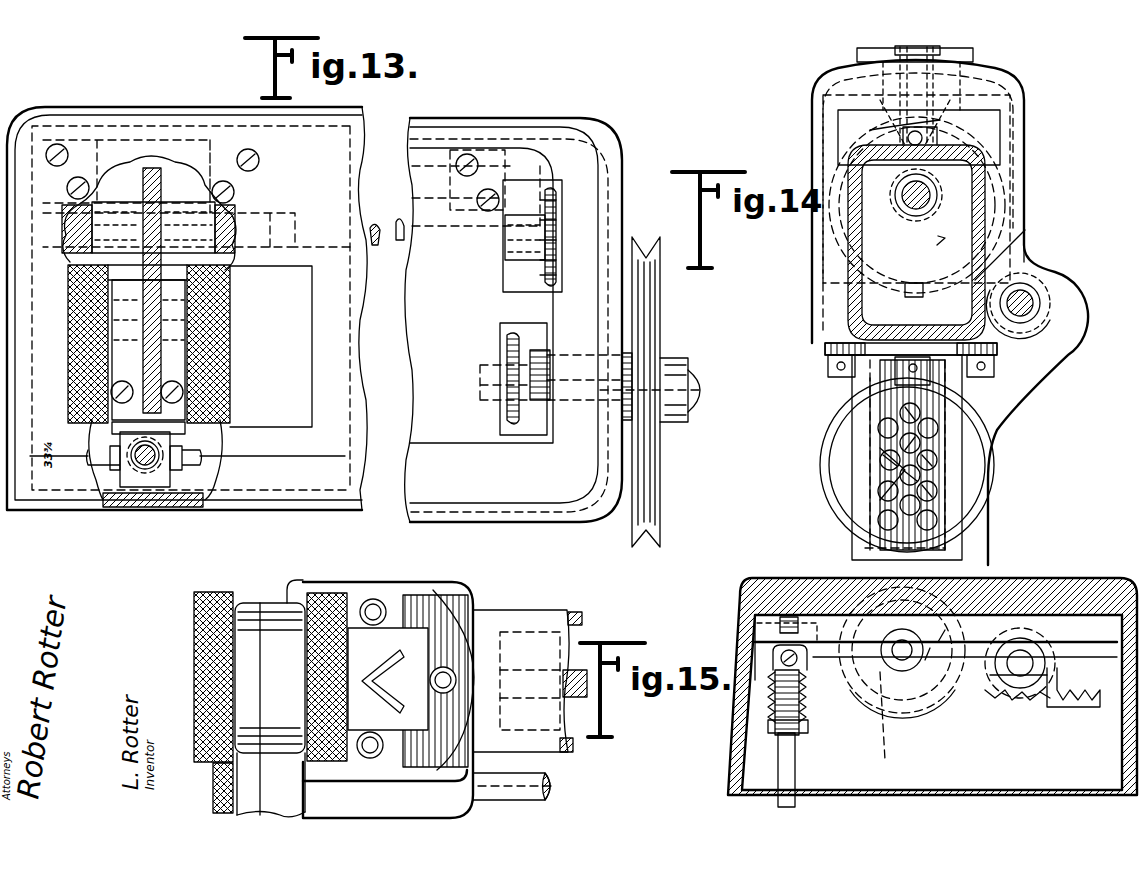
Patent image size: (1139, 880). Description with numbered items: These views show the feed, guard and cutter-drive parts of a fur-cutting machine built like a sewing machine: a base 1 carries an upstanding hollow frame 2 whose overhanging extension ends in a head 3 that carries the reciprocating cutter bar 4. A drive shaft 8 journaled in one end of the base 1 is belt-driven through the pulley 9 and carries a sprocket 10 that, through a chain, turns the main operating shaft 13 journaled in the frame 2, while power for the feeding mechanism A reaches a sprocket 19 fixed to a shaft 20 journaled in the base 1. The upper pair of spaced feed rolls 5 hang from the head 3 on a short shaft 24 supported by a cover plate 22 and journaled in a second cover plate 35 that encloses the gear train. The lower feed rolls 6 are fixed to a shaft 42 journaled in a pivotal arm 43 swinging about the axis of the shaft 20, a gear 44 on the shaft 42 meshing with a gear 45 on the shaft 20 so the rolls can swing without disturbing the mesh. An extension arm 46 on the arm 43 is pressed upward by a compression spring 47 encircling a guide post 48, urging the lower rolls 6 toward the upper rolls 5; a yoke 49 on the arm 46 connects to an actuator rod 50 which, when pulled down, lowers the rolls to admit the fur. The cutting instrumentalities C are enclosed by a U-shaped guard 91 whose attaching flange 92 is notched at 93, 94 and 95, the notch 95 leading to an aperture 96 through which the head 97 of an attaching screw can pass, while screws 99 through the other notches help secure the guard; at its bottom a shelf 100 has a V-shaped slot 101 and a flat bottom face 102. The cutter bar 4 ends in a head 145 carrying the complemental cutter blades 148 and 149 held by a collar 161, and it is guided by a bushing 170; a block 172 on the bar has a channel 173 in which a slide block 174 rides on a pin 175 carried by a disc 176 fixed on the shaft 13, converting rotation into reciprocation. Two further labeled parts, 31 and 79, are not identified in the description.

In FIG. 13, the base 1 is at (216, 85).
In FIG. 14, the frame 2 is at (1000, 245).
In FIG. 15, the frame 2 is at (560, 613).
In FIG. 13, the head 3 is at (434, 87).
In FIG. 14, the head 3 is at (1025, 150).
In FIG. 15, the head 3 is at (345, 590).
In FIG. 14, the cutter bar 4 is at (900, 234).
In FIG. 14, the upper feed rolls 5 is at (985, 515).
In FIG. 15, the upper feed rolls 5 is at (195, 650).
In FIG. 13, the lower feed rolls 6 is at (110, 382).
In FIG. 14, the lower feed rolls 6 is at (945, 575).
In FIG. 13, the drive shaft 8 is at (700, 396).
In FIG. 13, the pulley 9 is at (650, 505).
In FIG. 13, the sprocket 10 is at (510, 358).
In FIG. 14, the main operating shaft 13 is at (935, 188).
In FIG. 15, the main operating shaft 13 is at (575, 700).
In FIG. 13, the sprocket 19 is at (545, 198).
In FIG. 13, the shaft 20 is at (424, 242).
In FIG. 14, the shaft 20 is at (1030, 298).
In FIG. 15, the shaft 20 is at (555, 790).
In FIG. 15, the cover plate 22 is at (300, 585).
In FIG. 14, the short shaft 24 is at (885, 465).
In FIG. 15, the plate 31 is at (415, 735).
In FIG. 14, the cover plate 35 is at (1060, 358).
In FIG. 15, the cover plate 35 is at (268, 603).
In FIG. 13, the shaft 42 is at (70, 340).
In FIG. 13, the pivotal arm 43 is at (200, 285).
In FIG. 14, the pivotal arm 43 is at (935, 690).
In FIG. 13, the gear 44 is at (170, 348).
In FIG. 14, the gear 44 is at (905, 695).
In FIG. 13, the gear 45 is at (158, 178).
In FIG. 14, the gear 45 is at (1035, 730).
In FIG. 13, the extension arm 46 is at (165, 418).
In FIG. 14, the extension arm 46 is at (893, 719).
In FIG. 13, the compression spring 47 is at (128, 508).
In FIG. 14, the compression spring 47 is at (772, 692).
In FIG. 13, the guide post 48 is at (148, 465).
In FIG. 14, the guide post 48 is at (740, 623).
In FIG. 14, the yoke 49 is at (772, 735).
In FIG. 14, the actuator rod 50 is at (790, 778).
In FIG. 13, the plate 79 is at (310, 323).
In FIG. 14, the guard member 91 is at (930, 445).
In FIG. 15, the attaching flange 92 is at (430, 640).
In FIG. 15, the notch 93 is at (365, 598).
In FIG. 15, the notch 94 is at (347, 757).
In FIG. 15, the notch 95 is at (415, 690).
In FIG. 14, the aperture 96 is at (930, 392).
In FIG. 14, the screw head 97 is at (920, 385).
In FIG. 15, the screw head 97 is at (455, 673).
In FIG. 14, the attaching screws 99 is at (828, 366).
In FIG. 15, the attaching screws 99 is at (385, 612).
In FIG. 15, the shelf 100 is at (415, 710).
In FIG. 15, the V-shaped slot 101 is at (395, 655).
In FIG. 14, the bottom face 102 is at (852, 565).
In FIG. 14, the head 145 is at (860, 395).
In FIG. 14, the cutter blade 148 is at (885, 485).
In FIG. 15, the cutter blade 148 is at (350, 655).
In FIG. 14, the cutter blade 149 is at (930, 470).
In FIG. 15, the cutter blade 149 is at (360, 697).
In FIG. 14, the holding collar 161 is at (950, 418).
In FIG. 14, the lower bushing 170 is at (892, 296).
In FIG. 14, the block 172 is at (975, 96).
In FIG. 14, the channel 173 is at (1010, 125).
In FIG. 14, the slide block 174 is at (906, 111).
In FIG. 14, the pin 175 is at (845, 128).
In FIG. 14, the disc 176 is at (985, 203).
In FIG. 13, the feeding mechanism A is at (142, 183).
In FIG. 15, the cutting mechanism C is at (392, 675).